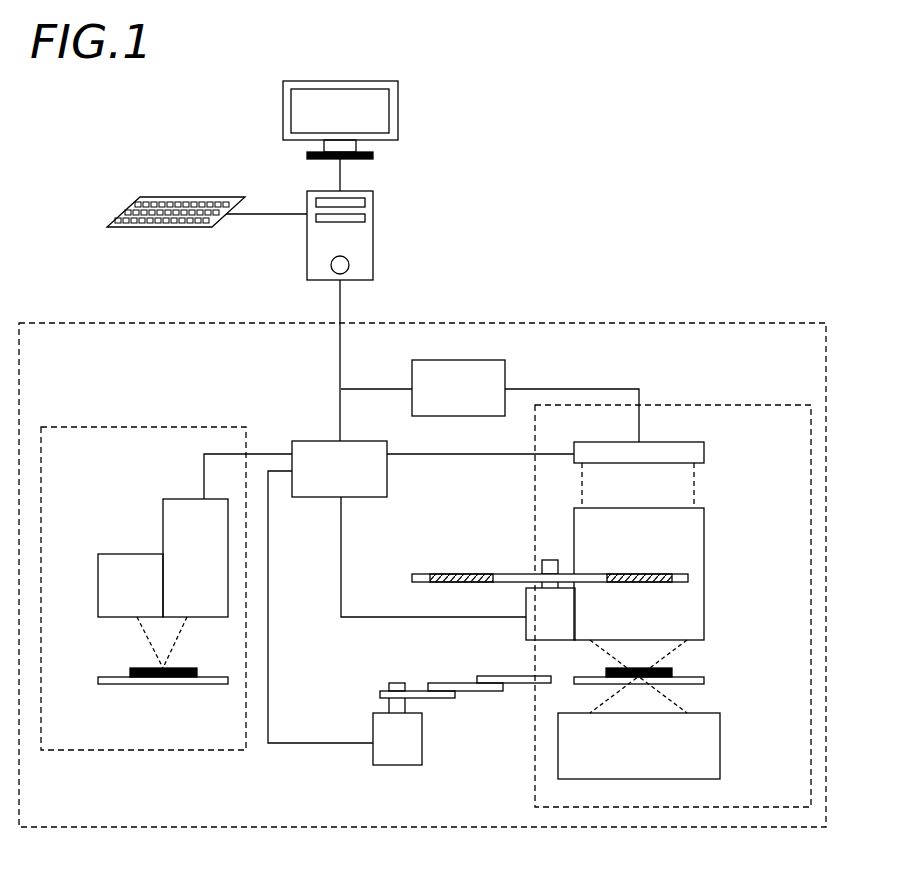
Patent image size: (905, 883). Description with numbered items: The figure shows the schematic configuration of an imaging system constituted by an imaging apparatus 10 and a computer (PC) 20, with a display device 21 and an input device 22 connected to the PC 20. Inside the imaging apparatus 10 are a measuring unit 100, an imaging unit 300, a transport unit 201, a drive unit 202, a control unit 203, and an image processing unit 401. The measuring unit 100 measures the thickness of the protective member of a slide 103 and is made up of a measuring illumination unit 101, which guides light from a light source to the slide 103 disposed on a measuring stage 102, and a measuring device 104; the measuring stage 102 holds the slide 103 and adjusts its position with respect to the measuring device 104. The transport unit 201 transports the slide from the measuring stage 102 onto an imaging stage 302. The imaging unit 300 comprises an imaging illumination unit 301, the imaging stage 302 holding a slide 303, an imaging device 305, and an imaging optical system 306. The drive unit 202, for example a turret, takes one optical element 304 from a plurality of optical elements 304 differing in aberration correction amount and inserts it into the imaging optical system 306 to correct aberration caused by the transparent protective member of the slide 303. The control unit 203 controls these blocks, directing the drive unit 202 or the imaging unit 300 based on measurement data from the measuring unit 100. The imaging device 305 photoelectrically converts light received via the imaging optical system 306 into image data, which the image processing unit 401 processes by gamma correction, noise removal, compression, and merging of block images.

The imaging apparatus 10 is at (422, 554).
The computer (PC) 20 is at (374, 234).
The display device 21 is at (378, 120).
The input device 22 is at (207, 232).
The measuring unit 100 is at (143, 569).
The measuring illumination unit 101 is at (107, 570).
The measuring stage 102 is at (154, 701).
The slide 103 is at (123, 654).
The measuring device 104 is at (192, 535).
The transport unit 201 is at (420, 720).
The drive unit 202 is at (507, 628).
The control unit 203 is at (415, 568).
The imaging unit 300 is at (673, 584).
The imaging illumination unit 301 is at (681, 746).
The imaging stage 302 is at (680, 702).
The slide 303 is at (692, 660).
The optical element 304 is at (549, 556).
The imaging device 305 is at (680, 440).
The imaging optical system 306 is at (680, 574).
The image processing unit 401 is at (490, 389).